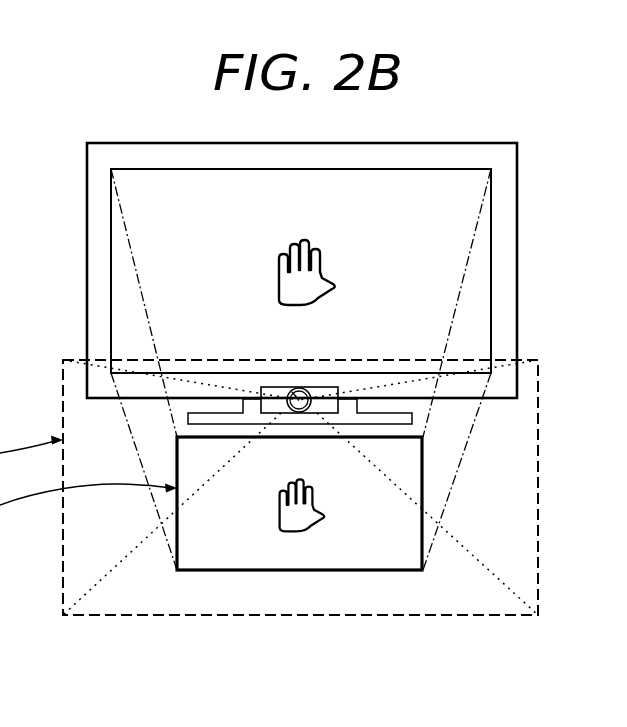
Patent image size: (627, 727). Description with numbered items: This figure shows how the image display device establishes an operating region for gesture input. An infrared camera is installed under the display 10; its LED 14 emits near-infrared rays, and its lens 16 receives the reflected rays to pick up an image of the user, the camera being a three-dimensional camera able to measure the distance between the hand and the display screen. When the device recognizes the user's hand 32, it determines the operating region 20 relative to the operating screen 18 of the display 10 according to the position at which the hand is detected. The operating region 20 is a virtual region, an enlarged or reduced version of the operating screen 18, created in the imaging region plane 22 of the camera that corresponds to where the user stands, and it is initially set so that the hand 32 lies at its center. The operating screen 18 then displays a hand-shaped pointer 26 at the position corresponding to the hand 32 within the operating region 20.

The display 10 is at (507, 188).
The operating screen 18 is at (438, 225).
The LED 14 is at (324, 387).
The lens 16 is at (291, 388).
The pointer 26 is at (312, 294).
The operating region 20 is at (352, 572).
The imaging region plane 22 is at (228, 617).
The hand 32 is at (308, 521).